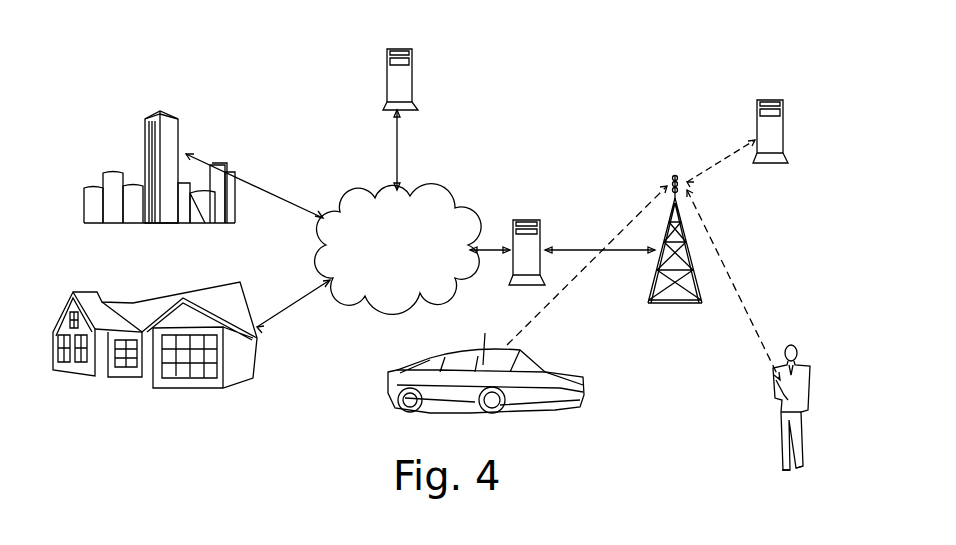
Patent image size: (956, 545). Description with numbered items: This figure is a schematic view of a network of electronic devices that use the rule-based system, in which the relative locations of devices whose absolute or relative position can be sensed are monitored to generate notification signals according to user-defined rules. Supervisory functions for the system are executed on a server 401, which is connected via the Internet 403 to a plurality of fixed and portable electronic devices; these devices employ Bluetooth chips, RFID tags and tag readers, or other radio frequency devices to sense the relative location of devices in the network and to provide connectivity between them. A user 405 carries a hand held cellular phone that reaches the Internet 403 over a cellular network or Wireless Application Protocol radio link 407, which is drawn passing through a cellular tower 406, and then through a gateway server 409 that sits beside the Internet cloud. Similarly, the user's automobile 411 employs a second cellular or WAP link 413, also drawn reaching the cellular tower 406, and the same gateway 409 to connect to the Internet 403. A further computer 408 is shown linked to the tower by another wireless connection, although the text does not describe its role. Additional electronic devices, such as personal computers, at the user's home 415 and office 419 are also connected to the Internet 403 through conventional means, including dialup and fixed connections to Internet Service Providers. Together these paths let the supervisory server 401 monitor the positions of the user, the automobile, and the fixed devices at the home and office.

The server 401 is at (408, 87).
The Internet 403 is at (452, 210).
The user 405 is at (780, 413).
The cellular tower 406 is at (682, 222).
The radio link 407 is at (753, 328).
The server 408 is at (767, 100).
The gateway server 409 is at (538, 220).
The automobile 411 is at (430, 355).
The second cellular or WAP link 413 is at (587, 272).
The home 415 is at (255, 355).
The office 419 is at (175, 133).